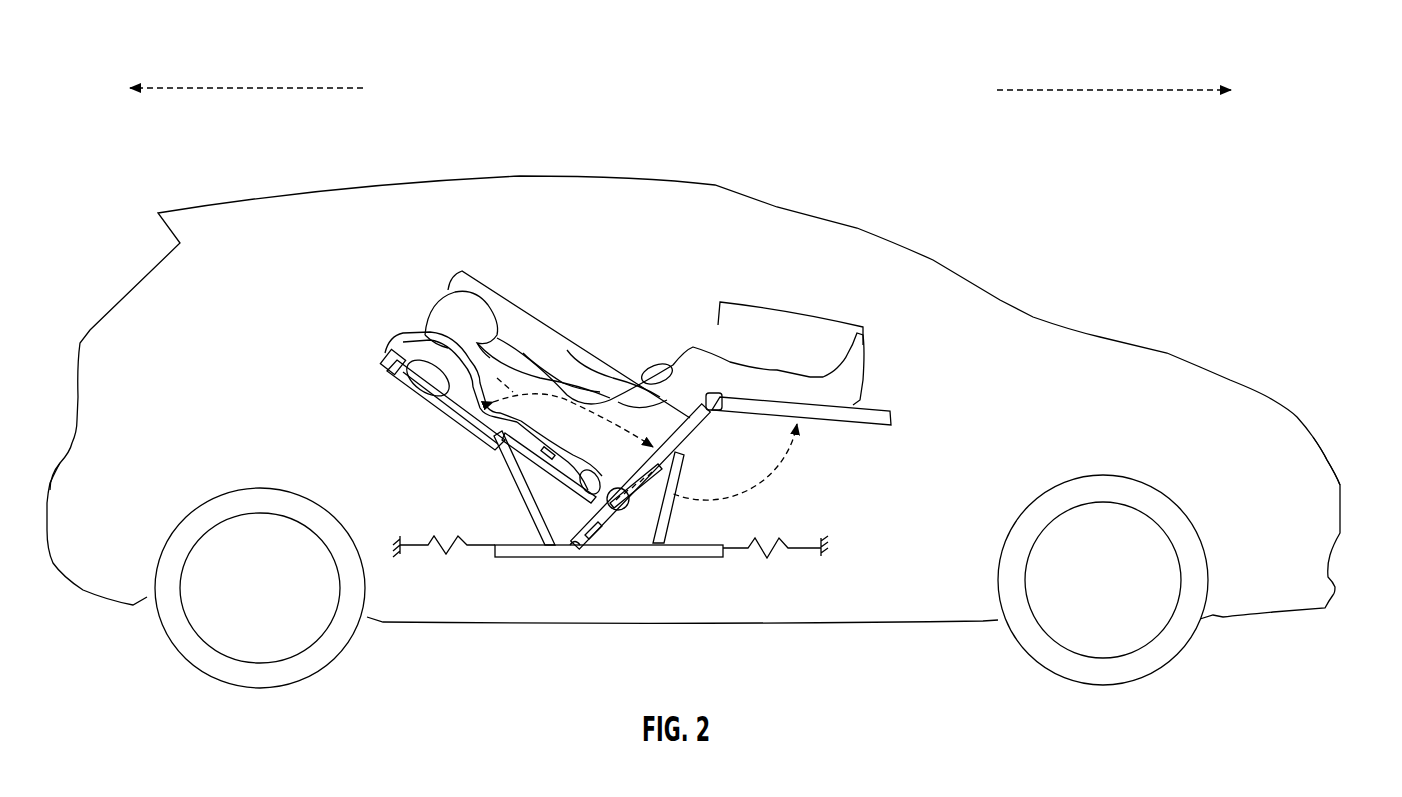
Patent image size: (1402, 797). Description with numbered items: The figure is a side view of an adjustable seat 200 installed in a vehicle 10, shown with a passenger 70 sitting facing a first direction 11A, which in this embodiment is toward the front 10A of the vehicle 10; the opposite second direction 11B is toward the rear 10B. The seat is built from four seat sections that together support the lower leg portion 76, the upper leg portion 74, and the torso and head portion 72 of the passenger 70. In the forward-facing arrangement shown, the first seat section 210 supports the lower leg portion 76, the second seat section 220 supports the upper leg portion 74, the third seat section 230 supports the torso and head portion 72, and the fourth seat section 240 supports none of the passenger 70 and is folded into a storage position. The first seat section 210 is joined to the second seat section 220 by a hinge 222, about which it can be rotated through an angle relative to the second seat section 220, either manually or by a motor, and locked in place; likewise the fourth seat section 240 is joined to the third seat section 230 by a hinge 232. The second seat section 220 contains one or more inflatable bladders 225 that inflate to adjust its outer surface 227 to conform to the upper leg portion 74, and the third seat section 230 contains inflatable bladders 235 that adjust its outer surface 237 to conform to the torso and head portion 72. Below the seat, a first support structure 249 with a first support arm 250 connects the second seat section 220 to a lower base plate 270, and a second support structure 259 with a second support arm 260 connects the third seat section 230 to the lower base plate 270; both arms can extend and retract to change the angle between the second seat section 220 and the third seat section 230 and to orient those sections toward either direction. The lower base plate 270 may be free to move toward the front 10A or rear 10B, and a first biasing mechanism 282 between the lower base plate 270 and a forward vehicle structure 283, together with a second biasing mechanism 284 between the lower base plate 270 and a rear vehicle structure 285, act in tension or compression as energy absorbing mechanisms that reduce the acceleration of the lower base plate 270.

The vehicle 10 is at (716, 185).
The front 10A is at (1340, 485).
The rear 10B is at (50, 488).
The first direction 11A is at (1088, 88).
The second direction 11B is at (272, 88).
The passenger 70 is at (440, 293).
The torso and head portion 72 is at (565, 345).
The upper leg portion 74 is at (645, 397).
The lower leg portion 76 is at (792, 314).
The adjustable seat 200 is at (350, 278).
The first seat section 210 is at (808, 421).
The second seat section 220 is at (702, 432).
The hinge 222 is at (716, 415).
The inflatable bladders 225 is at (612, 502).
The outer surface 227 is at (573, 548).
The third seat section 230 is at (537, 463).
The hinge 232 is at (390, 372).
The inflatable bladders 235 is at (428, 378).
The outer surface 237 is at (422, 335).
The fourth seat section 240 is at (442, 412).
The first support structure 249 is at (670, 531).
The first support arm 250 is at (672, 497).
The second support structure 259 is at (468, 478).
The second support arm 260 is at (510, 478).
The lower base plate 270 is at (632, 557).
The first biasing mechanism 282 is at (785, 555).
The forward vehicle structure 283 is at (828, 555).
The second biasing mechanism 284 is at (450, 557).
The rear vehicle structure 285 is at (398, 553).